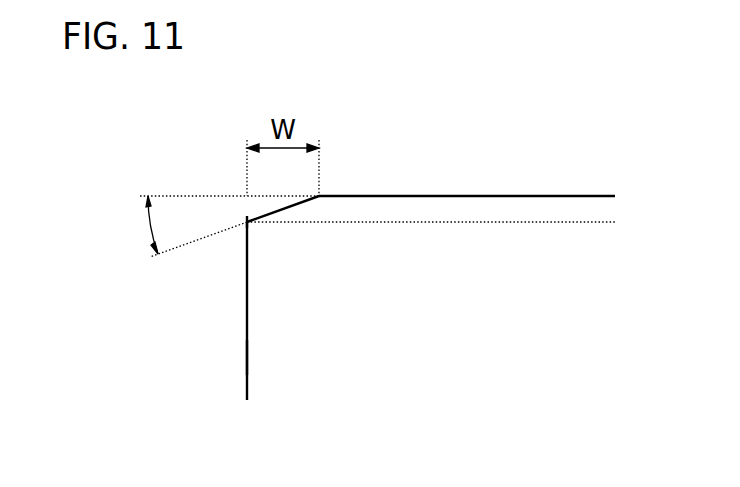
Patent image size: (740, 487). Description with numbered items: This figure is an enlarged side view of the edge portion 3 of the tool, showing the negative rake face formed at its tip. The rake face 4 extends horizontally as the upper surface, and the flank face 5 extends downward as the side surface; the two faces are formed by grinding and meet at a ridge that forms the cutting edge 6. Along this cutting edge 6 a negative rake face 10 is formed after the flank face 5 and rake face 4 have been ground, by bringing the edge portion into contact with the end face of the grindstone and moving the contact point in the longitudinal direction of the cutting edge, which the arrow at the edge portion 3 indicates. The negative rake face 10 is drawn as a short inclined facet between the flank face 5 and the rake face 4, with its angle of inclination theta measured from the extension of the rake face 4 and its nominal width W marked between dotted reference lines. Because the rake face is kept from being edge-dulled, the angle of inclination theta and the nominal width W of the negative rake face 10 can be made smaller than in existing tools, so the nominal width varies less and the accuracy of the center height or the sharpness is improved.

The edge portion 3 is at (293, 357).
The rake face 4 is at (498, 196).
The flank face 5 is at (247, 292).
The cutting edge 6 is at (246, 221).
The negative rake face 10 is at (266, 215).
The angle of inclination theta is at (150, 226).